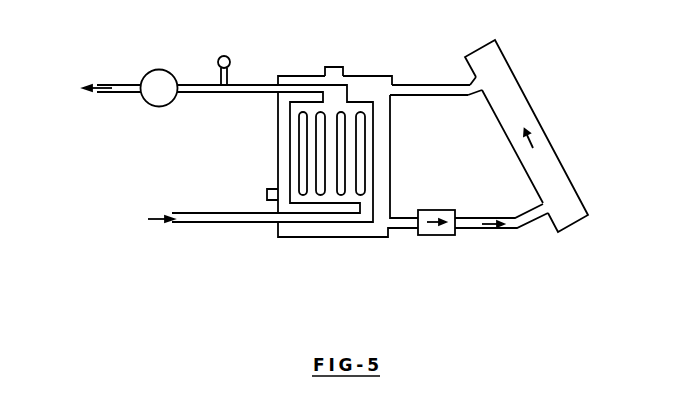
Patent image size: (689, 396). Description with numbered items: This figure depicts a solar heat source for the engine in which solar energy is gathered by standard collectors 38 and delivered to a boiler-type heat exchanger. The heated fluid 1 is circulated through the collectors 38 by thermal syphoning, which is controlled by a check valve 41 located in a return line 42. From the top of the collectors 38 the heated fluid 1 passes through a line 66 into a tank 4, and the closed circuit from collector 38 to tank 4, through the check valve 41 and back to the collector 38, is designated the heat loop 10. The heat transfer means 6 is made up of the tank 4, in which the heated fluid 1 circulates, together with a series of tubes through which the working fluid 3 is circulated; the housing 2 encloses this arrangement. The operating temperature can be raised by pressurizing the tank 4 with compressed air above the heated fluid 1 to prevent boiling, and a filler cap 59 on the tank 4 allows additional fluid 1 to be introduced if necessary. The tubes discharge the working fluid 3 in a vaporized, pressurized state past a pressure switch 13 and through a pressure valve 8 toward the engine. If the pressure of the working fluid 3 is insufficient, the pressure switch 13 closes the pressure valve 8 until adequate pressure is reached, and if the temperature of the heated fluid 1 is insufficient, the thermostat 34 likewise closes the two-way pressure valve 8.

The heated fluid 1 is at (533, 147).
The heat exchanger housing 2 is at (338, 237).
The working fluid 3 is at (95, 95).
The tank 4 is at (392, 186).
The heat transfer means 6 is at (392, 72).
The pressure valve 8 is at (147, 103).
The heat loop 10 is at (438, 85).
The pressure switch 13 is at (233, 53).
The thermostat 34 is at (268, 190).
The collectors 38 is at (512, 88).
The check valve 41 is at (430, 238).
The return line 42 is at (490, 230).
The filler cap 59 is at (338, 63).
The line 66 is at (455, 97).